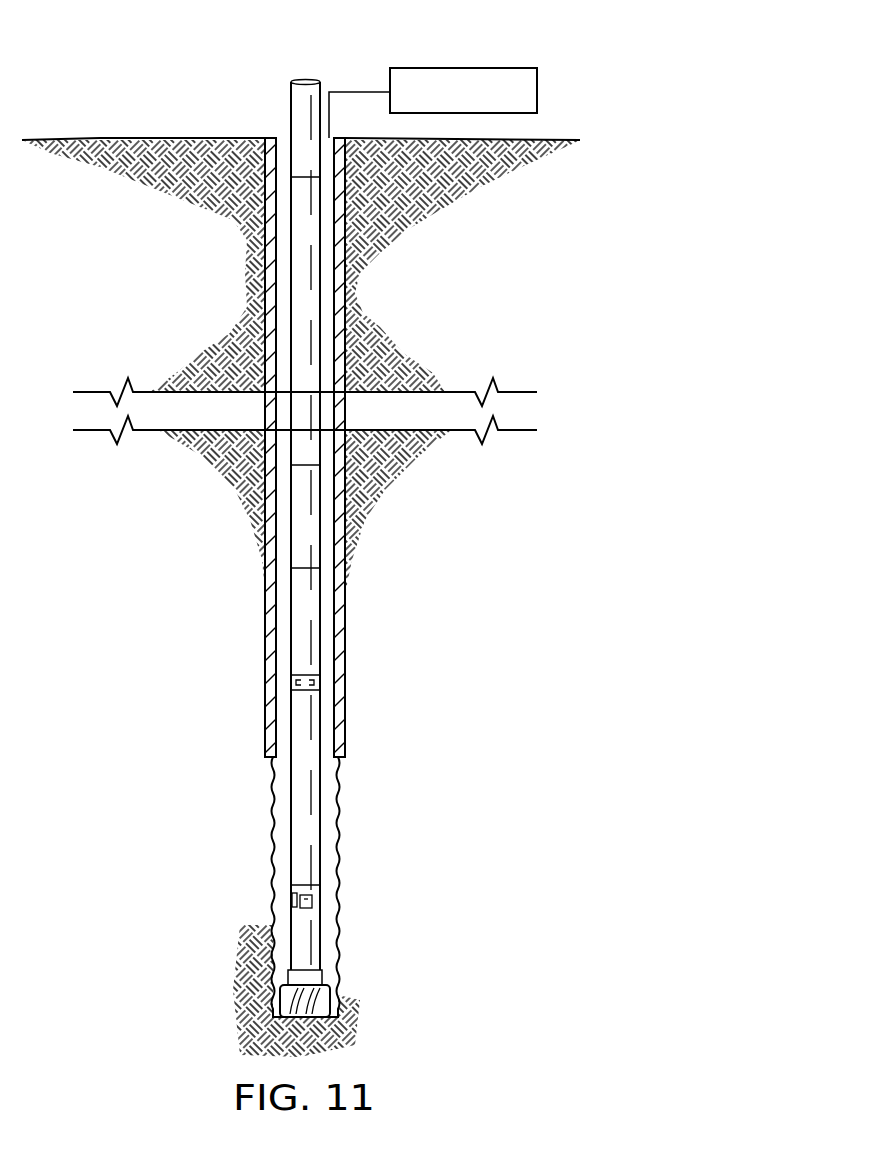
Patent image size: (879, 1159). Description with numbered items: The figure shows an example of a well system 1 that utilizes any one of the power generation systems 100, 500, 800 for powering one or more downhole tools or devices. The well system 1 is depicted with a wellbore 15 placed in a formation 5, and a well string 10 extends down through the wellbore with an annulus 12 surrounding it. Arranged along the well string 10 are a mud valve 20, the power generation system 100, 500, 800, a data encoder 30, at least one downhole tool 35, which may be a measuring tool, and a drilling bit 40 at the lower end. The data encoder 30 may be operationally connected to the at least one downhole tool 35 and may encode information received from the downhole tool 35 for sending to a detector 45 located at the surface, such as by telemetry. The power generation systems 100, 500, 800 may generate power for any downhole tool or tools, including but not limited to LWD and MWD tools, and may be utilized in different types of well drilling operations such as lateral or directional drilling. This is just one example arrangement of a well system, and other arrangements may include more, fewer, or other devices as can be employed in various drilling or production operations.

The well system 1 is at (155, 52).
The formation 5 is at (387, 203).
The well string 10 is at (406, 549).
The annulus 12 is at (282, 260).
The wellbore 15 is at (332, 952).
The mud valve 20 is at (320, 682).
The data encoder 30 is at (315, 835).
The downhole tool 35 is at (313, 902).
The drilling bit 40 is at (330, 983).
The detector 45 is at (465, 68).
The power generation system 100 is at (411, 725).
The power generation system 500 is at (411, 725).
The power generation system 800 is at (310, 733).